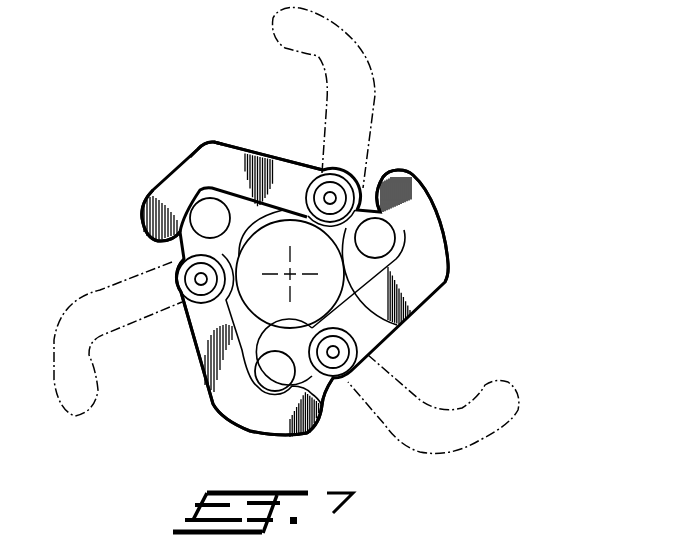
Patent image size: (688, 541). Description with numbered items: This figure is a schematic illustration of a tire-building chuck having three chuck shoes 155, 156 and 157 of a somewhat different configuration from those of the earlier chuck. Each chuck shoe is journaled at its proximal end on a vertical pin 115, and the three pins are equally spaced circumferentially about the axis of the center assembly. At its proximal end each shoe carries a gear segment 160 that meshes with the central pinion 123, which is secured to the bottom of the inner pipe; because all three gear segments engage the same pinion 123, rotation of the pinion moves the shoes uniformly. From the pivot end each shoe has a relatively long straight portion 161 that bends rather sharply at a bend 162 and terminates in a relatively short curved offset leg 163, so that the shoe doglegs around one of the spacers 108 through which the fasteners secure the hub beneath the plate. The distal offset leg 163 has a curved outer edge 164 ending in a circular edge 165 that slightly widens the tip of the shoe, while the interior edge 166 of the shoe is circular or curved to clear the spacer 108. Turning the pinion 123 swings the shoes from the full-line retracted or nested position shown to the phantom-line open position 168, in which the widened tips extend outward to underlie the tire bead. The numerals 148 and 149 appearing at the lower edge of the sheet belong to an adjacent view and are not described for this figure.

The spacer 108 is at (196, 204).
The vertical pin 115 is at (327, 194).
The pinion 123 is at (397, 325).
The chuck shoe 155 is at (255, 140).
The chuck shoe 156 is at (466, 267).
The chuck shoe 157 is at (184, 360).
The gear segment 160 is at (362, 192).
The straight portion 161 is at (297, 164).
The bend 162 is at (207, 141).
The curved offset leg 163 is at (143, 195).
The curved outer edge 164 is at (271, 435).
The circular edge 165 is at (327, 417).
The interior edge 166 is at (176, 265).
The open position 168 is at (522, 424).
The adjacent figure numeral 148 is at (132, 518).
The adjacent figure numeral 149 is at (112, 528).